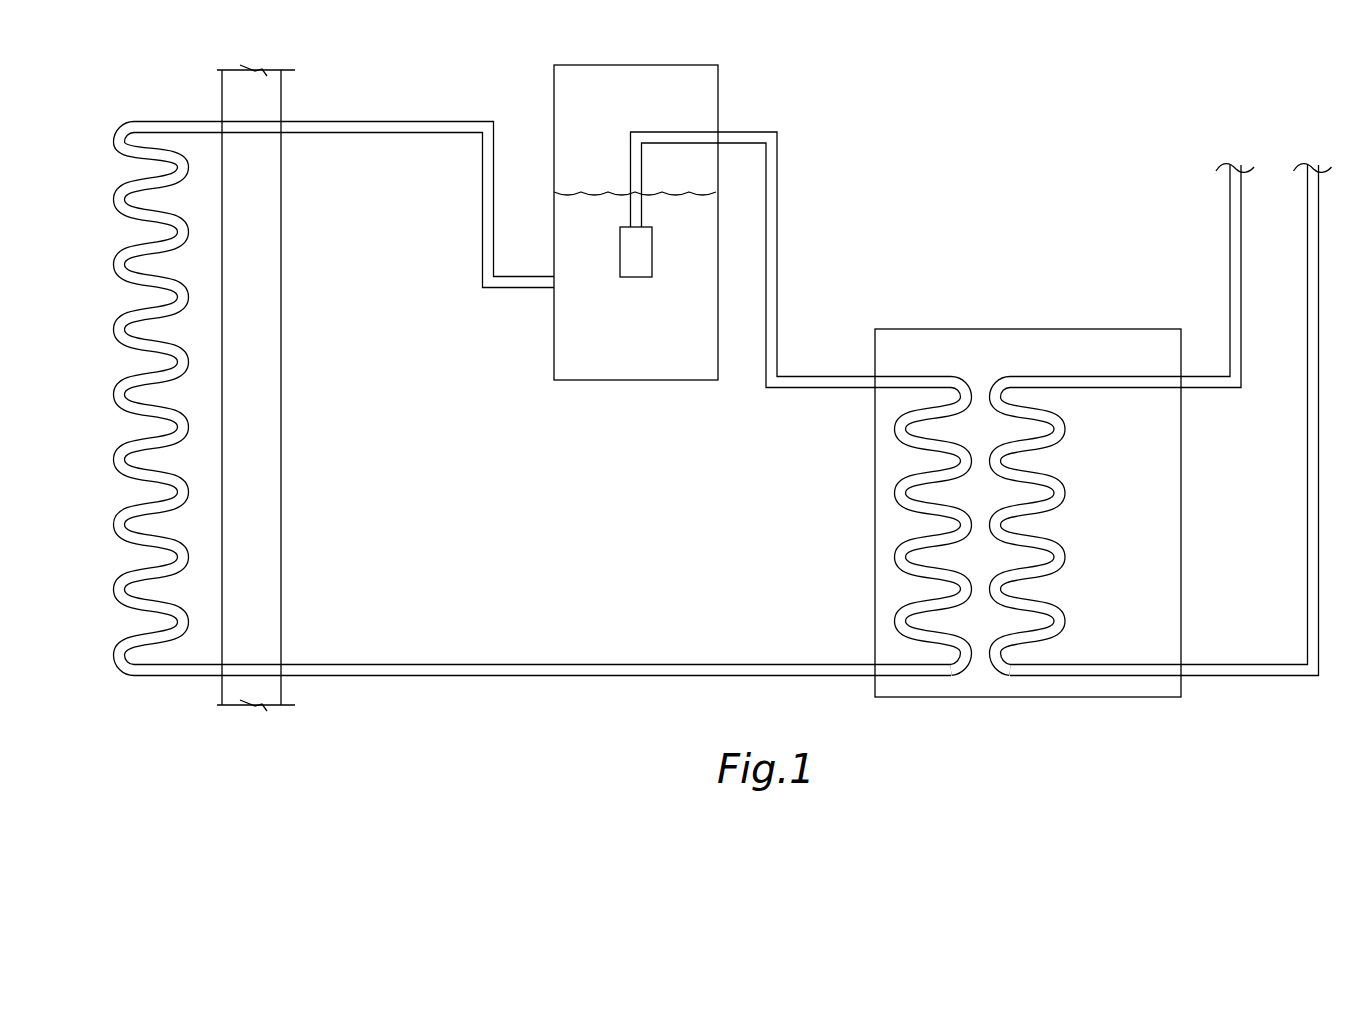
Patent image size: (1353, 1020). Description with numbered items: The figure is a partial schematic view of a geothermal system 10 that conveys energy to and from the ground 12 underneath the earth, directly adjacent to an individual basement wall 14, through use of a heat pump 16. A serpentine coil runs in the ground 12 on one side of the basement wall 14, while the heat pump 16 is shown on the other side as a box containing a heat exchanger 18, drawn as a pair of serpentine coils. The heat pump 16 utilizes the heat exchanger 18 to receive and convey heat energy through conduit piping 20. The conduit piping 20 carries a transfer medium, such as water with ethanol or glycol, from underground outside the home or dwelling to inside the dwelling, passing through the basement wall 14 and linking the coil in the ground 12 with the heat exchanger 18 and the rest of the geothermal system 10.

The geothermal system 10 is at (944, 170).
The ground 12 is at (212, 349).
The basement wall 14 is at (282, 385).
The heat pump 16 is at (1043, 345).
The heat exchanger 18 is at (1062, 484).
The conduit piping 20 is at (815, 388).